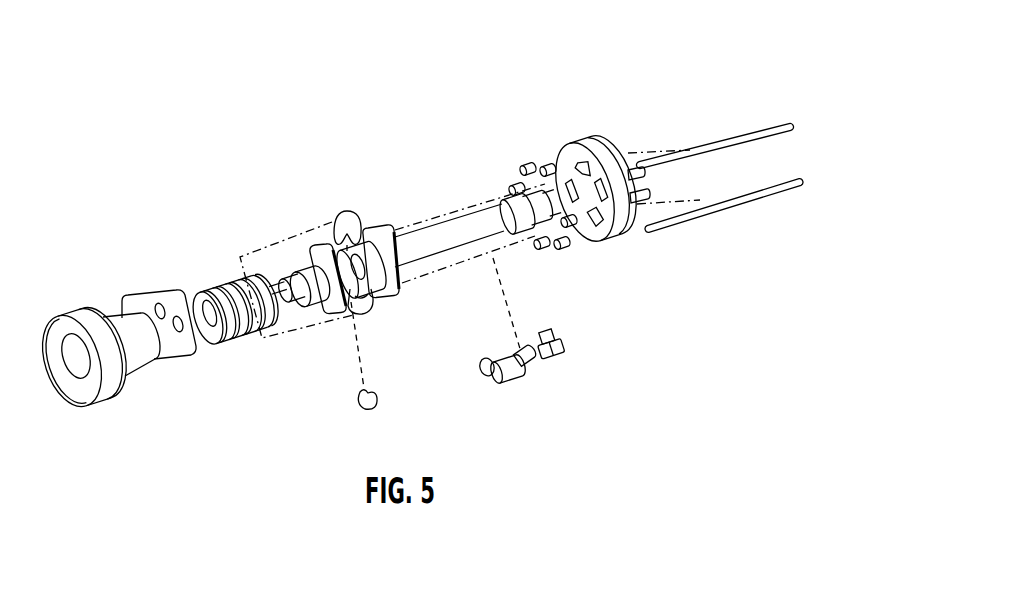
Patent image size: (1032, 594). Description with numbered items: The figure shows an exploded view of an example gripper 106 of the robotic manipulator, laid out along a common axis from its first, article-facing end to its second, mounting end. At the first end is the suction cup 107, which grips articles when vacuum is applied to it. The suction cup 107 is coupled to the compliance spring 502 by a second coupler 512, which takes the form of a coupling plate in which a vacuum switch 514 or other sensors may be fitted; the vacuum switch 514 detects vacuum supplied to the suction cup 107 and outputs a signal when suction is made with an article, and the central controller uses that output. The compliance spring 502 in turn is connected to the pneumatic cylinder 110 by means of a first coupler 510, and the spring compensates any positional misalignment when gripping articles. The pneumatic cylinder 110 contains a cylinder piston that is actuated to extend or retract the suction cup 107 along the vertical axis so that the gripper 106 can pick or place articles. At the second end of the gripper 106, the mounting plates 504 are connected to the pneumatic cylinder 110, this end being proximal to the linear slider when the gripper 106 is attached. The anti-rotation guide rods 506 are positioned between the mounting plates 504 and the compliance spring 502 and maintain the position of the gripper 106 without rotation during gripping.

The gripper 106 is at (311, 107).
The suction cup 107 is at (118, 377).
The pneumatic cylinder 110 is at (448, 212).
The compliance spring 502 is at (231, 279).
The mounting plates 504 is at (617, 145).
The anti-rotation guide rods 506 is at (656, 234).
The first coupler 510 is at (379, 313).
The second coupler 512 is at (187, 347).
The vacuum switch 514 is at (513, 376).